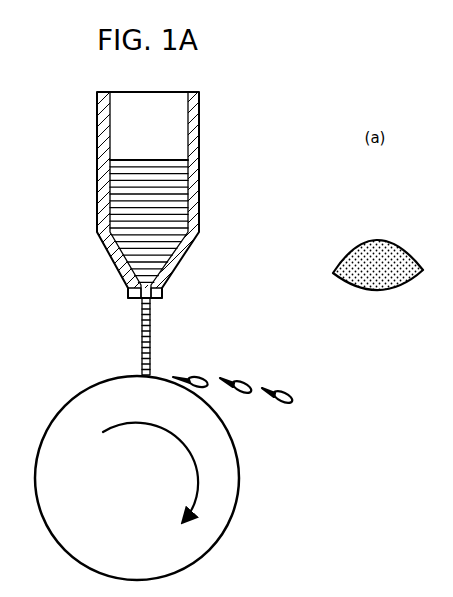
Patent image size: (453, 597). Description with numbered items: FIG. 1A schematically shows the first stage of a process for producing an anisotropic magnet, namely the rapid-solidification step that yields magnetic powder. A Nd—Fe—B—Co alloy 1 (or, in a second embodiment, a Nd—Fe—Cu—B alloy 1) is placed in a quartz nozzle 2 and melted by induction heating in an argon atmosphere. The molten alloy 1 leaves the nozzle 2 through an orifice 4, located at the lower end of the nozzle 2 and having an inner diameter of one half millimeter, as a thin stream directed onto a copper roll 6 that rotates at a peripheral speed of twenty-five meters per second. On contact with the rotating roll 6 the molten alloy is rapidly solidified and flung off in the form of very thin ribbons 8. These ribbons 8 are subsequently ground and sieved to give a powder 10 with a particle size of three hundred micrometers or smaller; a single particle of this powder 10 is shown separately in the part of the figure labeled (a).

The alloy 1 is at (150, 166).
The nozzle 2 is at (98, 145).
The orifice 4 is at (128, 292).
The roll 6 is at (68, 408).
The ribbon 8 is at (200, 378).
The powder 10 is at (367, 230).